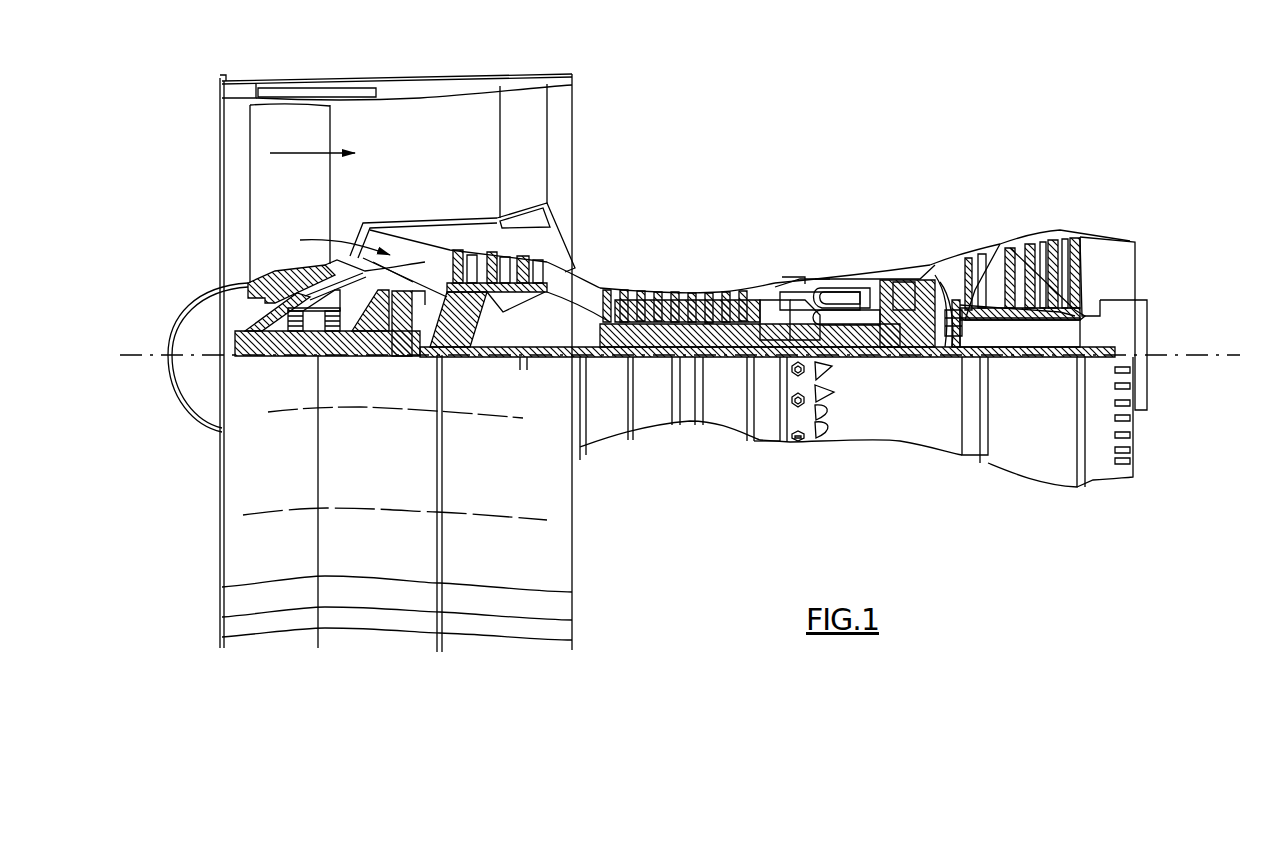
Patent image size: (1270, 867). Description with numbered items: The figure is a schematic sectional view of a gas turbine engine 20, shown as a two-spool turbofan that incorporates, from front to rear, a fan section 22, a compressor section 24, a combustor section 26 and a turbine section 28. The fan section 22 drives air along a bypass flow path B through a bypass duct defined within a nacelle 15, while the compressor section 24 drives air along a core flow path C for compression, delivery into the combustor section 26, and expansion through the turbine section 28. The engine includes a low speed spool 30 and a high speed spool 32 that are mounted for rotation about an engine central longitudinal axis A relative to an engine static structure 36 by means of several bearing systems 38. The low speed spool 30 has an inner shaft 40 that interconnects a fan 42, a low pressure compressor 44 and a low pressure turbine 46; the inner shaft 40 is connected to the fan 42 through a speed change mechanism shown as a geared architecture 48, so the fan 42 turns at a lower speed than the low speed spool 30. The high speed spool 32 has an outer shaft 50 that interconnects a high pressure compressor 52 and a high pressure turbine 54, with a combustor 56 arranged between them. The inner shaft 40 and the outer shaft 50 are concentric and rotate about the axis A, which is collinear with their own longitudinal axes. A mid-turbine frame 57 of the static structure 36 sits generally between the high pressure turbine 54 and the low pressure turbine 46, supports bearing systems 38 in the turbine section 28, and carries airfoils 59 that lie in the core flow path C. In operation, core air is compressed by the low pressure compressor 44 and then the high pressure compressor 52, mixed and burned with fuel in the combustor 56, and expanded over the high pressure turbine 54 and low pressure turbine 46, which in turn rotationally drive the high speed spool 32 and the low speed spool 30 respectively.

The nacelle 15 is at (397, 82).
The gas turbine engine 20 is at (843, 130).
The fan section 22 is at (328, 76).
The compressor section 24 is at (622, 265).
The combustor section 26 is at (838, 258).
The turbine section 28 is at (980, 220).
The low speed spool 30 is at (726, 365).
The high speed spool 32 is at (768, 320).
The engine static structure 36 is at (765, 445).
The bearing systems 38 is at (536, 350).
The inner shaft 40 is at (592, 390).
The fan 42 is at (290, 193).
The low pressure compressor 44 is at (505, 262).
The low pressure turbine 46 is at (1024, 236).
The geared architecture 48 is at (403, 340).
The outer shaft 50 is at (845, 358).
The high pressure compressor 52 is at (697, 300).
The high pressure turbine 54 is at (904, 280).
The combustor 56 is at (842, 298).
The mid-turbine frame 57 is at (942, 272).
The airfoils 59 is at (948, 312).
The engine central longitudinal axis A is at (1232, 355).
The bypass flow path B is at (305, 152).
The core flow path C is at (335, 242).